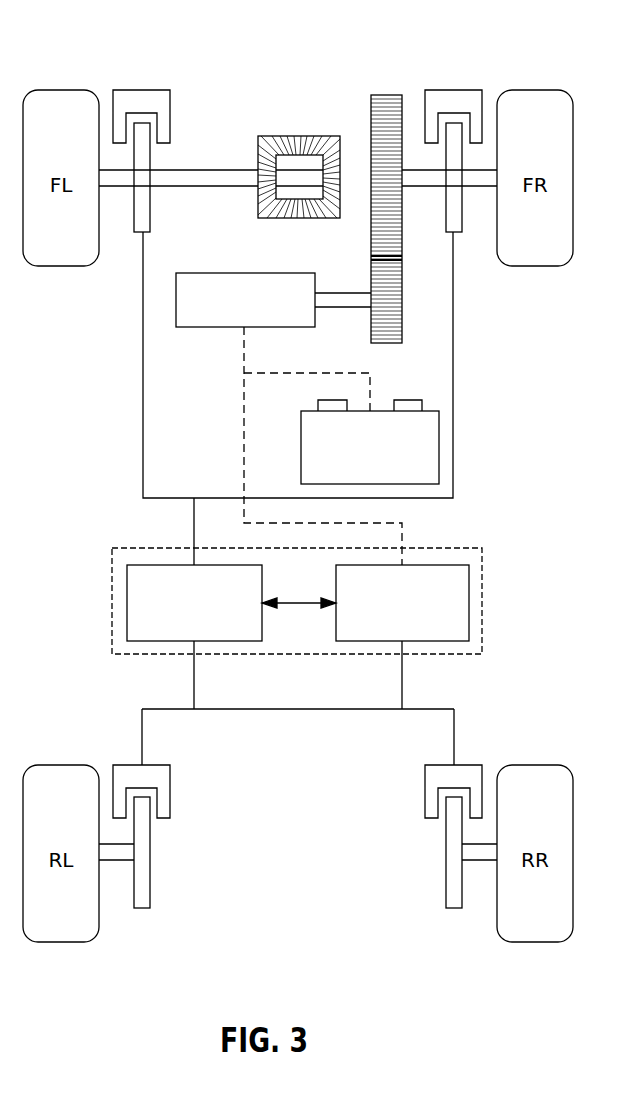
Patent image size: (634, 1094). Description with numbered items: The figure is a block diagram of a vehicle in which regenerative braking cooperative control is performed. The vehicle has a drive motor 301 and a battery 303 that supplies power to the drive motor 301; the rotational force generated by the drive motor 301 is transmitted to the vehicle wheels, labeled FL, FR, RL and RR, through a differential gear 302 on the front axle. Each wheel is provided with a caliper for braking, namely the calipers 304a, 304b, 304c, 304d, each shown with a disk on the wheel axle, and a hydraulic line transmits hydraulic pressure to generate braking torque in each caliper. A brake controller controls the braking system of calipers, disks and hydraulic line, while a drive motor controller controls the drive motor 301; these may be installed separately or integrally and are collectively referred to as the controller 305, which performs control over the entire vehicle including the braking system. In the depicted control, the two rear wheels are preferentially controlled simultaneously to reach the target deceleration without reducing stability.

The drive motor 301 is at (176, 298).
The differential gear 302 is at (301, 136).
The battery 303 is at (439, 447).
The caliper 304a is at (452, 90).
The caliper 304b is at (143, 90).
The caliper 304c is at (126, 765).
The caliper 304d is at (470, 765).
The controller 305 is at (482, 603).